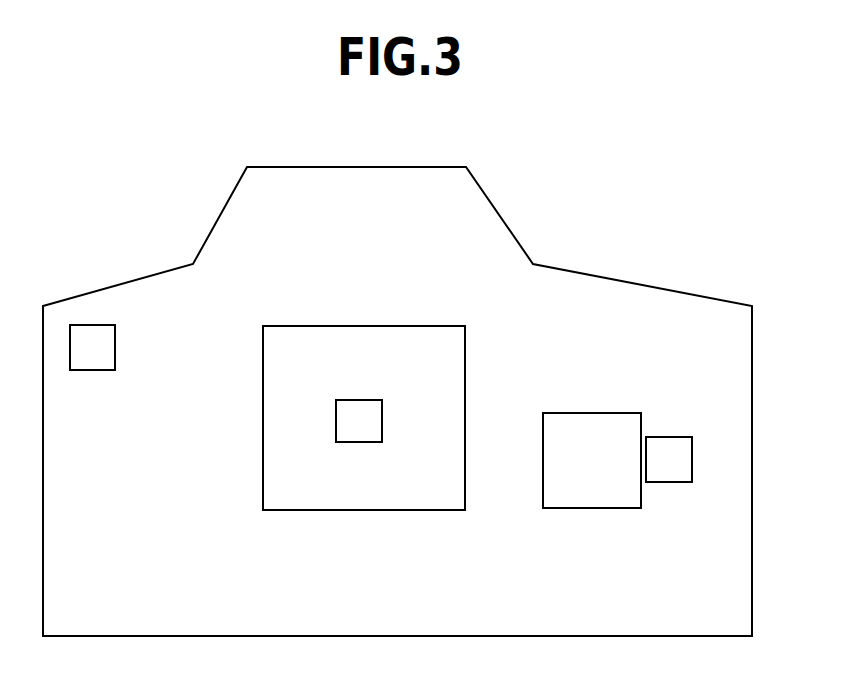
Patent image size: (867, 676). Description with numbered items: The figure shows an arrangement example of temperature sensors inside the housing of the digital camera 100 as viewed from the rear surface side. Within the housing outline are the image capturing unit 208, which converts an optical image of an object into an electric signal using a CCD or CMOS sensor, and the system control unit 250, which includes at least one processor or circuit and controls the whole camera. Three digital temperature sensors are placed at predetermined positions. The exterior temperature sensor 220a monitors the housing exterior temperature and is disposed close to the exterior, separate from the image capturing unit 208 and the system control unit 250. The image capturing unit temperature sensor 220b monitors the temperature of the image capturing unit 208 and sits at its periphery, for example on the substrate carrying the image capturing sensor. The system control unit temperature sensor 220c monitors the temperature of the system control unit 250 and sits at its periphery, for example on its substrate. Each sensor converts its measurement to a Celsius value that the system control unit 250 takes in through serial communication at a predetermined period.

The digital camera 100 is at (586, 288).
The image capturing unit 208 is at (368, 325).
The exterior temperature sensor 220a is at (106, 347).
The image capturing unit temperature sensor 220b is at (359, 410).
The system control unit temperature sensor 220c is at (671, 447).
The system control unit 250 is at (593, 422).